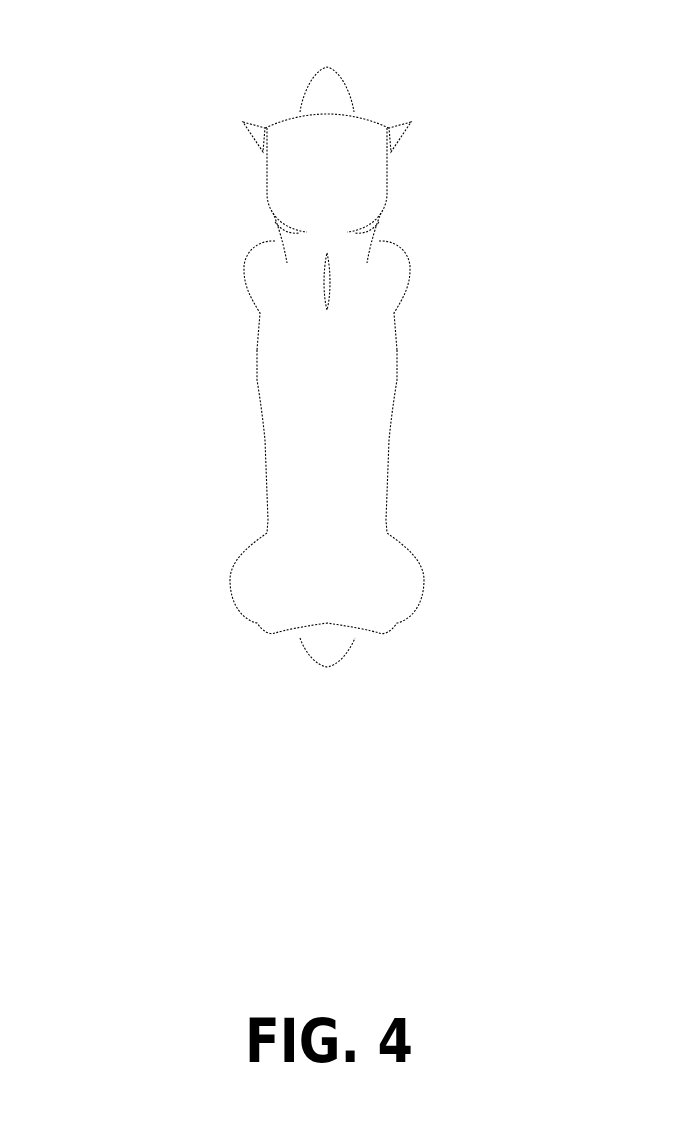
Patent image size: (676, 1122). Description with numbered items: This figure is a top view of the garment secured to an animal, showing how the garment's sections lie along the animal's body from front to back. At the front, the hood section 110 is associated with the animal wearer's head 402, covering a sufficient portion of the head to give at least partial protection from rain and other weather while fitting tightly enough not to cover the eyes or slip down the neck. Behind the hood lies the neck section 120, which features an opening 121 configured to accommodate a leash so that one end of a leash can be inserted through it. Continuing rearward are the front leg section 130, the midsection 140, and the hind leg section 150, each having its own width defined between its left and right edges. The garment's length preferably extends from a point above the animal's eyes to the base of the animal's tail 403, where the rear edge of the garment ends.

The hood section 110 is at (317, 172).
The neck section 120 is at (305, 247).
The opening 121 is at (320, 285).
The front leg section 130 is at (363, 282).
The midsection 140 is at (338, 457).
The hind leg section 150 is at (315, 577).
The head 402 is at (327, 100).
The base of the animal's tail 403 is at (310, 628).